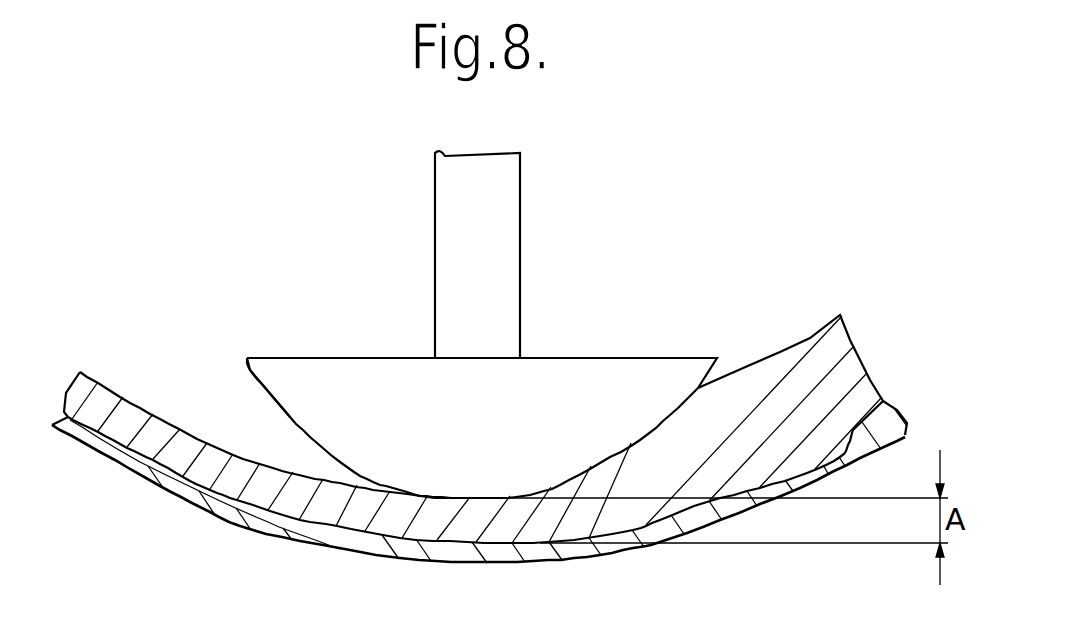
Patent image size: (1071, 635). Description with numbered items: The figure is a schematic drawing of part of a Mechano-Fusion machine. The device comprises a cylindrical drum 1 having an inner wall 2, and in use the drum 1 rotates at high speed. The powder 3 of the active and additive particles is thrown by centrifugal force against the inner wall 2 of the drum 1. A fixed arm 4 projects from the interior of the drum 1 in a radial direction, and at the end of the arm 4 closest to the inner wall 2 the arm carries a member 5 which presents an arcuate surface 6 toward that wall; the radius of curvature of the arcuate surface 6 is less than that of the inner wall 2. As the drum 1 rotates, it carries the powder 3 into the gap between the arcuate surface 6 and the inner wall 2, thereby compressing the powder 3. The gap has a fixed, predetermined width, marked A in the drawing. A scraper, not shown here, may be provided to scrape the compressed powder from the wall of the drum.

The cylindrical drum 1 is at (507, 569).
The inner wall 2 is at (886, 403).
The powder 3 is at (792, 390).
The fixed arm 4 is at (497, 203).
The member 5 is at (604, 380).
The arcuate surface 6 is at (268, 390).